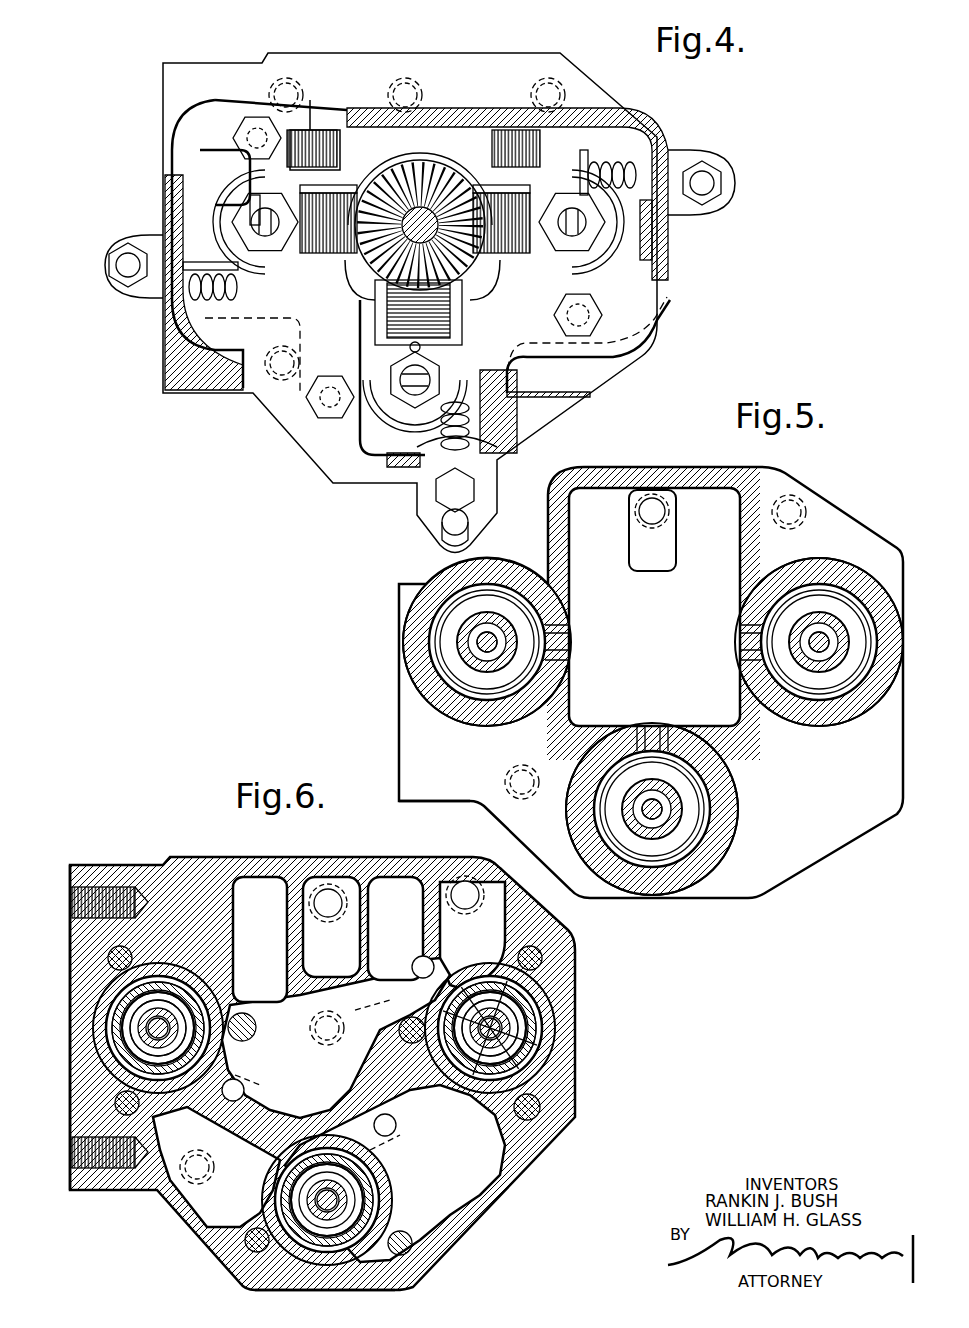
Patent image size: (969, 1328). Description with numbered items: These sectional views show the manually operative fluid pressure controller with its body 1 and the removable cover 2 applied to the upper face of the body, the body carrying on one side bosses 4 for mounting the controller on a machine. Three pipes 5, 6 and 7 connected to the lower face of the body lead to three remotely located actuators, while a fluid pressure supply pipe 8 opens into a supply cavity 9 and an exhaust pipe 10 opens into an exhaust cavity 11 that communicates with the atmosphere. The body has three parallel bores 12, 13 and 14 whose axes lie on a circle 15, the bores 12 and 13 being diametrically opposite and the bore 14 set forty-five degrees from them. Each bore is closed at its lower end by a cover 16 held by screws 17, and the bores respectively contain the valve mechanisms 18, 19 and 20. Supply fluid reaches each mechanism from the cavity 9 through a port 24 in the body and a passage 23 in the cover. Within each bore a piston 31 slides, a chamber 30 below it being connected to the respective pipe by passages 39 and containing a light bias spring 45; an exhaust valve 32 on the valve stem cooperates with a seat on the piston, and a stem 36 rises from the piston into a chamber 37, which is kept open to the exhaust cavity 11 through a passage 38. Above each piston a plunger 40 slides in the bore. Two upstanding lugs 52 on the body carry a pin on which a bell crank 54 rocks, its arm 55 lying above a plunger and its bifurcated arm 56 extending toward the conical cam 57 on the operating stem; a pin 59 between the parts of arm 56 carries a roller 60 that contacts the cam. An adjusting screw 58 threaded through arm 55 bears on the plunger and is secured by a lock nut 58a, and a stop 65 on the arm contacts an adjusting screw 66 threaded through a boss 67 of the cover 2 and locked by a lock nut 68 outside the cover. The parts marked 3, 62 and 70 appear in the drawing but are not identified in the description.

In FIG. 5, the body 1 is at (852, 525).
In FIG. 4, the cover 2 is at (352, 108).
In FIG. 4, the fastening nut 3 is at (235, 135).
In FIG. 4, the bosses 4 is at (165, 140).
In FIG. 5, the bosses 4 is at (399, 785).
In FIG. 6, the bosses 4 is at (70, 968).
In FIG. 4, the pipe 5 is at (290, 78).
In FIG. 6, the pipe 5 is at (205, 878).
In FIG. 4, the pipe 6 is at (548, 78).
In FIG. 5, the pipe 6 is at (805, 500).
In FIG. 6, the pipe 6 is at (475, 880).
In FIG. 4, the pipe 7 is at (268, 360).
In FIG. 5, the pipe 7 is at (522, 805).
In FIG. 6, the pipe 7 is at (460, 880).
In FIG. 6, the fluid pressure supply pipe 8 is at (318, 1014).
In FIG. 6, the cavity 9 is at (470, 1172).
In FIG. 4, the exhaust pipe 10 is at (403, 78).
In FIG. 5, the exhaust pipe 10 is at (665, 488).
In FIG. 6, the exhaust pipe 10 is at (332, 877).
In FIG. 5, the exhaust cavity 11 is at (690, 530).
In FIG. 6, the exhaust cavity 11 is at (372, 877).
In FIG. 5, the bore 12 is at (430, 648).
In FIG. 6, the bore 12 is at (110, 1025).
In FIG. 5, the bore 13 is at (832, 700).
In FIG. 6, the bore 13 is at (540, 1022).
In FIG. 5, the bore 14 is at (700, 825).
In FIG. 6, the bore 14 is at (260, 1270).
In FIG. 6, the circle 15 is at (450, 1142).
In FIG. 6, the cover 16 is at (588, 1068).
In FIG. 6, the screws 17 is at (118, 955).
In FIG. 6, the valve mechanism 18 is at (125, 1040).
In FIG. 6, the valve mechanism 19 is at (520, 1040).
In FIG. 6, the valve mechanism 20 is at (400, 1288).
In FIG. 6, the passage 23 is at (331, 1072).
In FIG. 6, the port 24 is at (412, 972).
In FIG. 6, the chamber 30 is at (190, 1000).
In FIG. 5, the piston 31 is at (830, 600).
In FIG. 6, the exhaust valve 32 is at (160, 990).
In FIG. 5, the stem 36 is at (500, 648).
In FIG. 5, the chamber 37 is at (560, 620).
In FIG. 5, the passage 38 is at (560, 640).
In FIG. 6, the passages 39 is at (228, 940).
In FIG. 4, the plunger 40 is at (190, 196).
In FIG. 6, the bias spring 45 is at (588, 968).
In FIG. 4, the upstanding lugs 52 is at (338, 150).
In FIG. 4, the bell crank 54 is at (406, 288).
In FIG. 4, the arm 55 is at (225, 185).
In FIG. 4, the arm 56 is at (385, 312).
In FIG. 4, the conical cam 57 is at (418, 160).
In FIG. 4, the adjusting screw 58 is at (290, 165).
In FIG. 4, the lock nut 58a is at (684, 235).
In FIG. 4, the pin 59 is at (419, 206).
In FIG. 4, the roller 60 is at (419, 212).
In FIG. 4, the adjusting nut 62 is at (300, 220).
In FIG. 4, the stop 65 is at (583, 175).
In FIG. 4, the adjusting screw 66 is at (615, 165).
In FIG. 4, the boss 67 is at (140, 295).
In FIG. 4, the lock nut 68 is at (112, 298).
In FIG. 4, the hub 70 is at (432, 212).